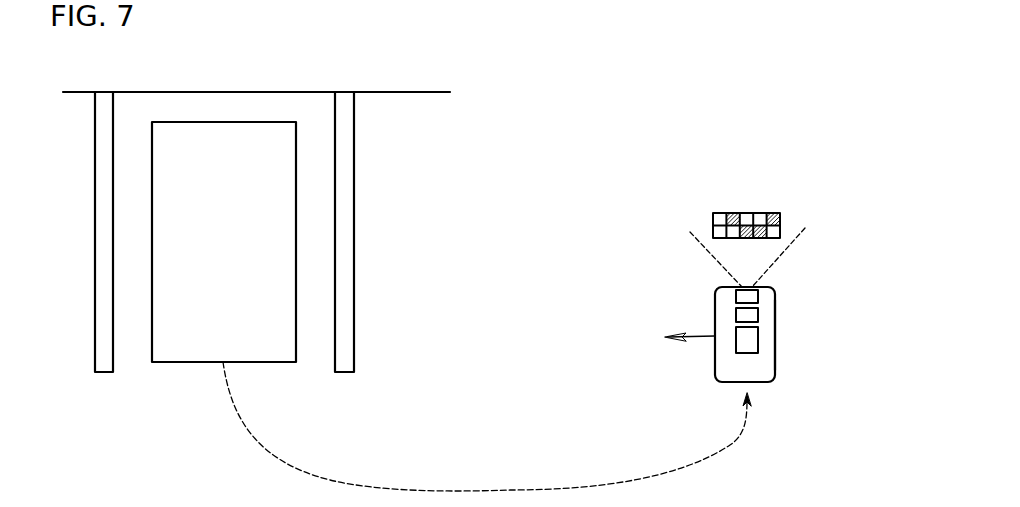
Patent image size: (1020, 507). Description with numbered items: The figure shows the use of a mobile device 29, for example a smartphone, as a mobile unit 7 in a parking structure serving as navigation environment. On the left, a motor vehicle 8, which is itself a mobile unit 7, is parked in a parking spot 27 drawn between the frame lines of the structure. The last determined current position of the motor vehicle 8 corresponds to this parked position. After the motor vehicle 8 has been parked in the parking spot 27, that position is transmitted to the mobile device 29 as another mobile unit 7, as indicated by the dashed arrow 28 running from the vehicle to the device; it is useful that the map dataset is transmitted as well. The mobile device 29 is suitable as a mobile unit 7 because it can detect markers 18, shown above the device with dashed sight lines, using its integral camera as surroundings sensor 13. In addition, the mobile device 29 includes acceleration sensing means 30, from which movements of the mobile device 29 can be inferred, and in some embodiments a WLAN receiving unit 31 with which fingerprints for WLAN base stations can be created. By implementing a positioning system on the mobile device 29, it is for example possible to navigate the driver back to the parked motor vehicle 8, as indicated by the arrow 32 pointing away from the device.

The mobile unit 7 is at (781, 367).
The motor vehicle 8 is at (152, 337).
The surroundings sensor 13 is at (735, 297).
The marker 18 is at (713, 220).
The parking spot 27 is at (137, 150).
The arrow 28 is at (508, 490).
The mobile device 29 is at (776, 323).
The acceleration sensing means 30 is at (758, 340).
The WLAN receiving unit 31 is at (735, 315).
The arrow 32 is at (695, 338).